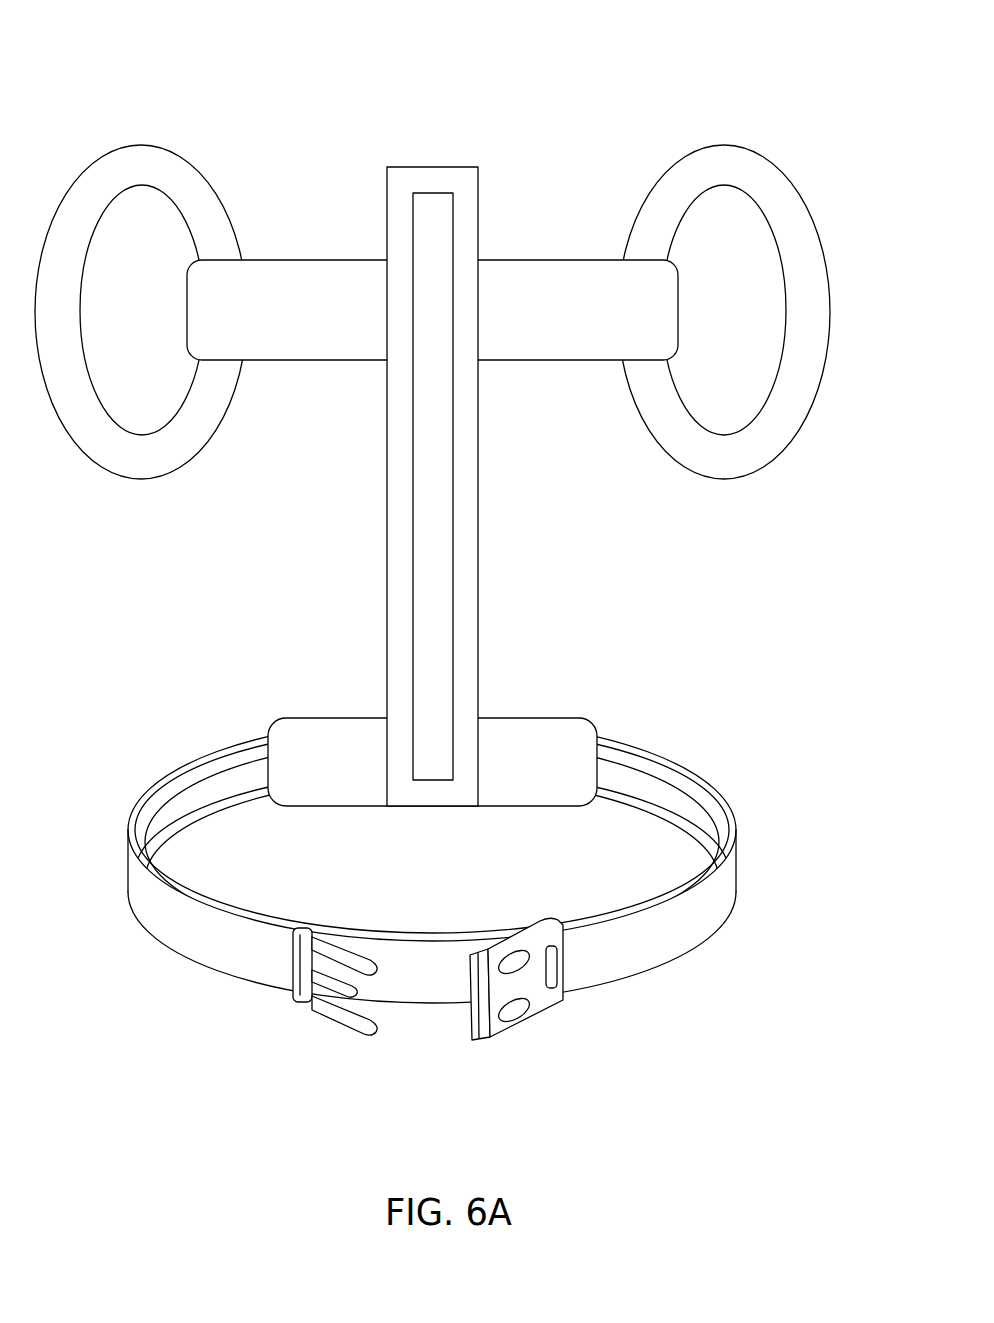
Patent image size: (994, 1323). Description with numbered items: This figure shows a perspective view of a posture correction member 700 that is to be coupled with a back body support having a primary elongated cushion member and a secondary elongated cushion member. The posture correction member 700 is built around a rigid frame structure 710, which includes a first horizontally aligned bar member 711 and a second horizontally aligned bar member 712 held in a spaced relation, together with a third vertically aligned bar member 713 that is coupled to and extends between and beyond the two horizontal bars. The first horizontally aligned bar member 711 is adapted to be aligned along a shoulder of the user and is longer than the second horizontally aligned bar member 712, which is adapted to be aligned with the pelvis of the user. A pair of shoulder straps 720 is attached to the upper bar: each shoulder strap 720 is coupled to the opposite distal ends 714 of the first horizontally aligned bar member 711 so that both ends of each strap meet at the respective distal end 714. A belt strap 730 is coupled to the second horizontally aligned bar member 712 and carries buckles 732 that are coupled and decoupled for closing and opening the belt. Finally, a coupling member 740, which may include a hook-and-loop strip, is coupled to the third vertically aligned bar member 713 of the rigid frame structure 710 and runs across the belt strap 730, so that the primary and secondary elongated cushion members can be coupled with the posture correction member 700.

The posture correction member 700 is at (574, 66).
The rigid frame structure 710 is at (432, 457).
The first horizontally aligned bar member 711 is at (432, 317).
The second horizontally aligned bar member 712 is at (552, 735).
The third vertically aligned bar member 713 is at (472, 534).
The opposite distal ends 714 is at (255, 353).
The pair of shoulder straps 720 is at (146, 140).
The belt strap 730 is at (432, 611).
The buckles 732 is at (320, 1002).
The coupling member 740 is at (443, 607).